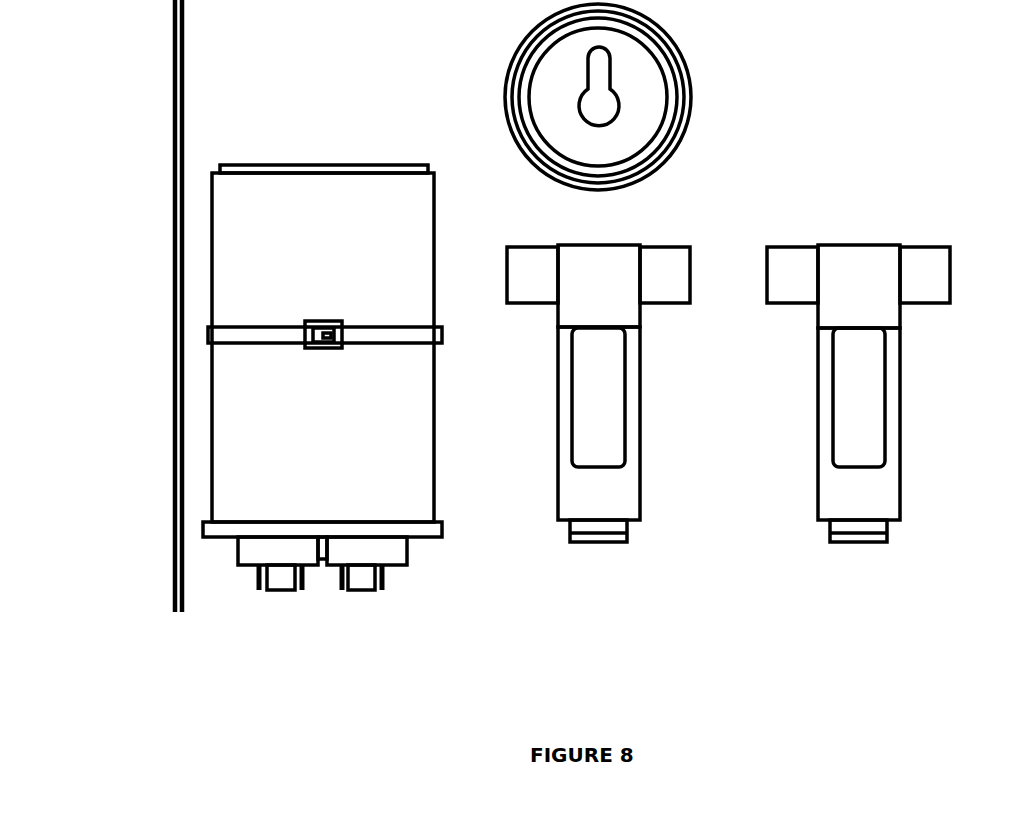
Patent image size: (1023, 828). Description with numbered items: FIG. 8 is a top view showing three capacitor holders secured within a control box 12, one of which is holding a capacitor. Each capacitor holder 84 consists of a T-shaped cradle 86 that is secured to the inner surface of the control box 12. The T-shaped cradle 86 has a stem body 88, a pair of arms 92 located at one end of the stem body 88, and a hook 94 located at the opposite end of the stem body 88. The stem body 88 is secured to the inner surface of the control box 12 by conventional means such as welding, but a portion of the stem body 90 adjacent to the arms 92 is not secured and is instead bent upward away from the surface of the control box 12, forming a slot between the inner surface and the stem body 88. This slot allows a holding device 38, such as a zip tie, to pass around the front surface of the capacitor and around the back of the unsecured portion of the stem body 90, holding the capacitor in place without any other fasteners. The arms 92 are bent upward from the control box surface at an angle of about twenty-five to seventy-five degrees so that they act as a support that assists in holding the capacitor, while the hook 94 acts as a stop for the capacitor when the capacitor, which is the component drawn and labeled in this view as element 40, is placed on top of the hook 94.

The control box 12 is at (843, 115).
The housing 40 is at (350, 253).
The holding device 38 is at (206, 338).
The capacitor holder 84 is at (714, 478).
The T-shaped cradle 86 is at (760, 441).
The stem body 88 is at (615, 423).
The portion of the stem body 90 is at (627, 305).
The arms 92 is at (690, 290).
The hook 94 is at (594, 543).